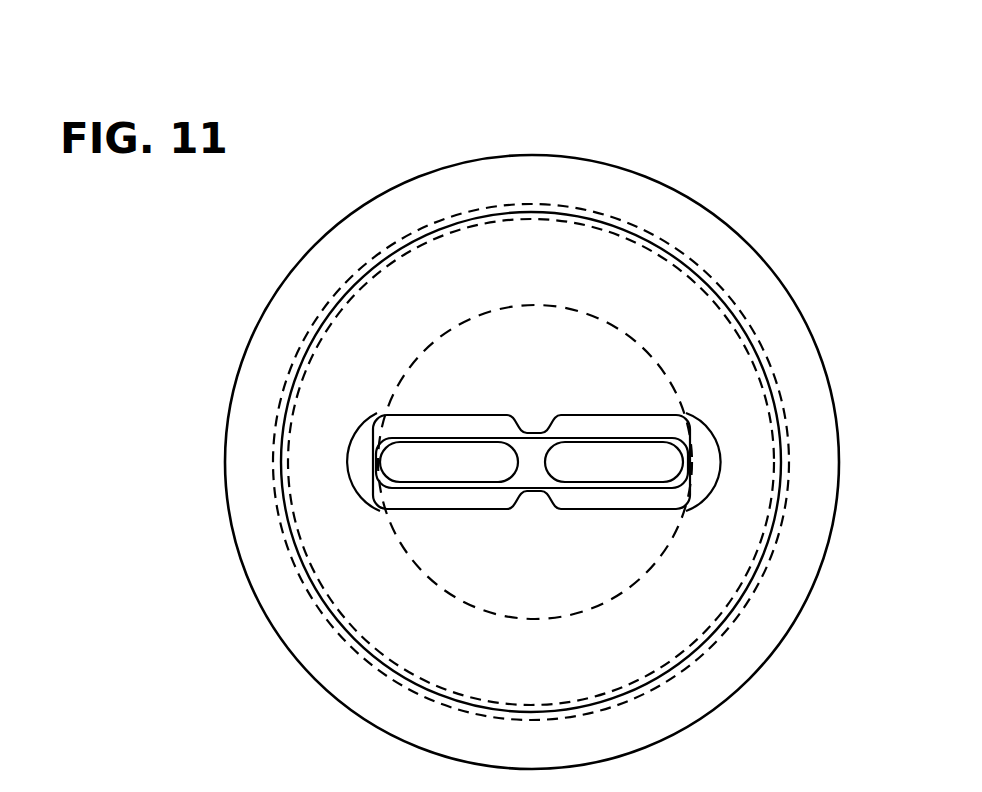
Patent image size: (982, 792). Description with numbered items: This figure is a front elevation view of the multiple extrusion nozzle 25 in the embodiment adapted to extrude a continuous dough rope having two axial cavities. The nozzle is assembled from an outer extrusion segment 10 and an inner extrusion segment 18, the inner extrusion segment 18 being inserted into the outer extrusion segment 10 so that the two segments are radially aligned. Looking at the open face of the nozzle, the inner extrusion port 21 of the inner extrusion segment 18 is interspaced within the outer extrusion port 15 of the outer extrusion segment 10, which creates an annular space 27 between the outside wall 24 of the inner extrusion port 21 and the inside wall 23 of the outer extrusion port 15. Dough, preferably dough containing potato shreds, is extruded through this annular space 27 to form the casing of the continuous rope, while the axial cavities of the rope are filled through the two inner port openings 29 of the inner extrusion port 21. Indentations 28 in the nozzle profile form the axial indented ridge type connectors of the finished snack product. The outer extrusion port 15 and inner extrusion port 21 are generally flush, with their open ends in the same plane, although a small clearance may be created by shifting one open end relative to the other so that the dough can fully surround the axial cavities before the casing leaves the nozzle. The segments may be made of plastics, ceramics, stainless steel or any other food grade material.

The outer extrusion segment 10 is at (637, 142).
The multiple extrusion nozzle 25 is at (740, 220).
The outer extrusion port 15 is at (418, 510).
The inner extrusion port 21 is at (617, 493).
The inner port openings 29 is at (420, 455).
The annular space 27 is at (360, 470).
The indentations 28 is at (535, 434).
The inner extrusion segment 18 is at (533, 460).
The outside wall 24 is at (695, 443).
The inside wall 23 is at (722, 463).